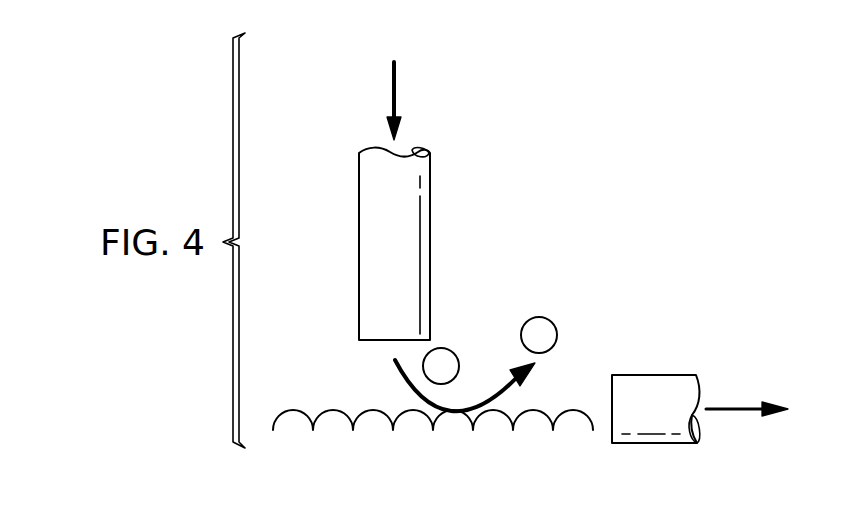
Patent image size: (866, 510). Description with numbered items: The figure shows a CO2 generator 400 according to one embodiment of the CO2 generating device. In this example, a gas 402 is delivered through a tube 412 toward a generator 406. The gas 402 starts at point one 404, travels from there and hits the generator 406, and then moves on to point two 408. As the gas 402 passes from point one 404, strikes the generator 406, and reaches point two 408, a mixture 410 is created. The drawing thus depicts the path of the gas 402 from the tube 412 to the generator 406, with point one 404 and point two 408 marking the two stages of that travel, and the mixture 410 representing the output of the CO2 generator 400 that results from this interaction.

The CO2 generator 400 is at (629, 102).
The gas 402 is at (401, 95).
The point one 404 is at (449, 348).
The generator 406 is at (333, 406).
The point two 408 is at (546, 318).
The mixture 410 is at (735, 406).
The tube 412 is at (358, 246).